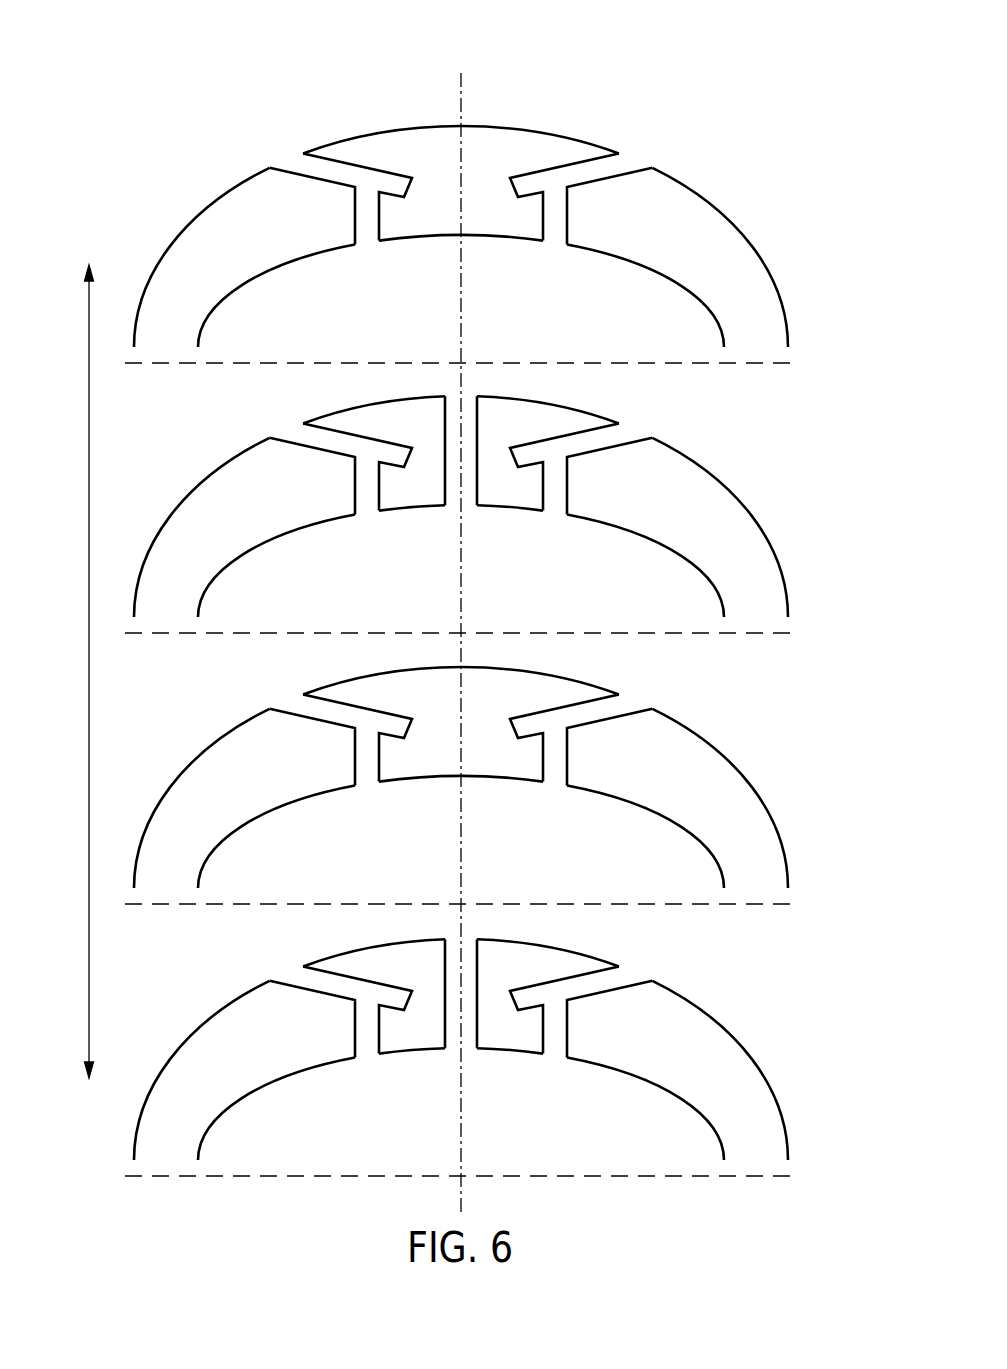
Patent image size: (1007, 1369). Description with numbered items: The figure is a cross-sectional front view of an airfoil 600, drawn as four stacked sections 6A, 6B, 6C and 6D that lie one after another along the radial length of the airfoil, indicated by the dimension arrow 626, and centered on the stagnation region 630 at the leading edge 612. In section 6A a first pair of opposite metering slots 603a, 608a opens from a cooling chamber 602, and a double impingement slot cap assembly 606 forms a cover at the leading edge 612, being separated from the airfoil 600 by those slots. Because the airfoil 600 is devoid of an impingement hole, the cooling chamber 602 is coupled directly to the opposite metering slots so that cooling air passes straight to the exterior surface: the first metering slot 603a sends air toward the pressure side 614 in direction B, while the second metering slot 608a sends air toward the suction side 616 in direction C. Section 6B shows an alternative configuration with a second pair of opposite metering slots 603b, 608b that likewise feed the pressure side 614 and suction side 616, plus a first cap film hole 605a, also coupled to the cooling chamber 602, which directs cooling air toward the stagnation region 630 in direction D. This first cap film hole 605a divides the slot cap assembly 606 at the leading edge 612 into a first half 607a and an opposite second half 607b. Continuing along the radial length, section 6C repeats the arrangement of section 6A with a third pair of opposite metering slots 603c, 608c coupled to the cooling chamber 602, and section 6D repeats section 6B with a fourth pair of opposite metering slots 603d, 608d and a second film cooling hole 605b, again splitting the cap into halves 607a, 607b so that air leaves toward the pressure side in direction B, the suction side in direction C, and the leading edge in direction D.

The airfoil 600 is at (696, 58).
The cooling chamber 602 is at (522, 311).
The first metering slot 603a is at (342, 175).
The first metering slot 603b is at (337, 443).
The metering slot 603c is at (337, 715).
The metering slot 603d is at (338, 985).
The first cap film hole 605a is at (453, 487).
The second film cooling hole 605b is at (452, 1030).
The double impingement slot cap assembly 606 is at (512, 127).
The first half 607a is at (377, 422).
The second half 607b is at (545, 427).
The second metering slot 608a is at (593, 167).
The second metering slot 608b is at (607, 447).
The metering slot 608c is at (607, 713).
The metering slot 608d is at (595, 987).
The leading edge 612 is at (565, 135).
The pressure side 614 is at (230, 177).
The suction side 616 is at (695, 174).
The stack height 626 is at (85, 603).
The stagnation region 630 is at (457, 92).
The section 6A is at (790, 267).
The section 6B is at (778, 517).
The section 6C is at (778, 777).
The section 6D is at (778, 1042).
The direction B is at (279, 562).
The direction C is at (643, 560).
The direction D is at (488, 695).